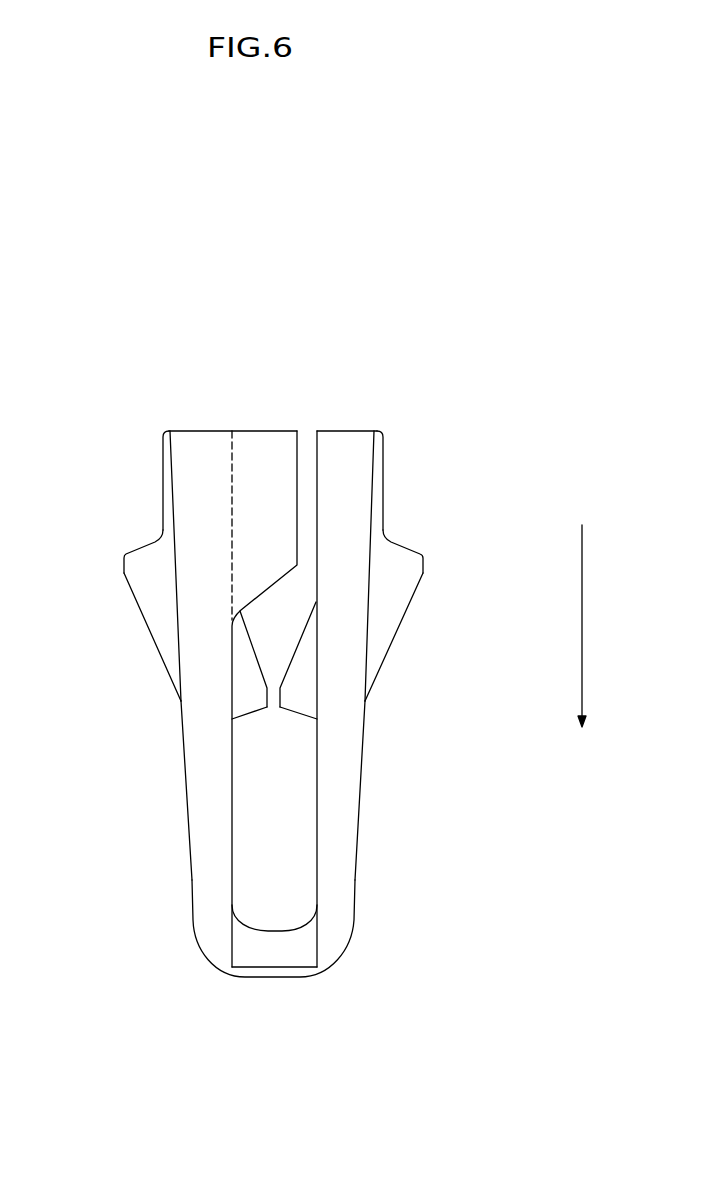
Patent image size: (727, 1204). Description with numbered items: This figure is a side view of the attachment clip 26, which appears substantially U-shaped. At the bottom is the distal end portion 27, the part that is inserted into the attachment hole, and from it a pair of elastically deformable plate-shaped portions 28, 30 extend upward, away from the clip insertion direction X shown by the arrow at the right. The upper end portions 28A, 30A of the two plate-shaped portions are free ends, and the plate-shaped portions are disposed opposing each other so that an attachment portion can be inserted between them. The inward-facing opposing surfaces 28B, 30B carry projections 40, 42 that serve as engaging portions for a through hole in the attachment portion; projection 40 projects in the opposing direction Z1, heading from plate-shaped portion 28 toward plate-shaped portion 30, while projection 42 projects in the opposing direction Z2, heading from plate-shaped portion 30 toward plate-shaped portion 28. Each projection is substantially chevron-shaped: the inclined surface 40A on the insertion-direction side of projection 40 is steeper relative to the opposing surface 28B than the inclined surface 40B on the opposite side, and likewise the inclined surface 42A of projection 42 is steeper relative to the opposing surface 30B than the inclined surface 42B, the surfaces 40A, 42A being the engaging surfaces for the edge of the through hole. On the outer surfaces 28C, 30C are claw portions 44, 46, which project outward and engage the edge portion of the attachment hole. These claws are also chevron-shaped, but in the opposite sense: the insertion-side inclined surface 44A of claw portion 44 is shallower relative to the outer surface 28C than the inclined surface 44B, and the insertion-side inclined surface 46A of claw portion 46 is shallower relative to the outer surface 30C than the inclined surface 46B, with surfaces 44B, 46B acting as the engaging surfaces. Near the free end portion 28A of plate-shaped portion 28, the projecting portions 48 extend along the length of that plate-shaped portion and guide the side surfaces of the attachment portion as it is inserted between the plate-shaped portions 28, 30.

The attachment clip 26 is at (404, 393).
The distal end portion 27 is at (270, 977).
The plate-shaped portion 28 is at (183, 772).
The end portion 28A is at (198, 430).
The opposing surface 28B is at (232, 843).
The outer surface 28C is at (186, 817).
The plate-shaped portion 30 is at (367, 772).
The end portion 30A is at (350, 430).
The opposing surface 30B is at (317, 843).
The outer surface 30C is at (361, 817).
The projection 40 is at (252, 731).
The inclined surface 40A is at (256, 718).
The inclined surface 40B is at (246, 639).
The projection 42 is at (297, 731).
The inclined surface 42A is at (293, 718).
The inclined surface 42B is at (303, 639).
The claw portion 44 is at (121, 555).
The inclined surface 44A is at (138, 617).
The inclined surface 44B is at (142, 547).
The claw portion 46 is at (431, 556).
The inclined surface 46A is at (405, 617).
The inclined surface 46B is at (406, 547).
The projecting portions 48 is at (277, 430).
The opposing direction Z1 is at (266, 785).
The opposing direction Z2 is at (283, 785).
The clip insertion direction X is at (582, 622).